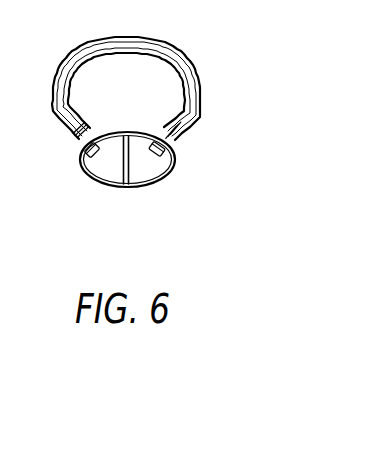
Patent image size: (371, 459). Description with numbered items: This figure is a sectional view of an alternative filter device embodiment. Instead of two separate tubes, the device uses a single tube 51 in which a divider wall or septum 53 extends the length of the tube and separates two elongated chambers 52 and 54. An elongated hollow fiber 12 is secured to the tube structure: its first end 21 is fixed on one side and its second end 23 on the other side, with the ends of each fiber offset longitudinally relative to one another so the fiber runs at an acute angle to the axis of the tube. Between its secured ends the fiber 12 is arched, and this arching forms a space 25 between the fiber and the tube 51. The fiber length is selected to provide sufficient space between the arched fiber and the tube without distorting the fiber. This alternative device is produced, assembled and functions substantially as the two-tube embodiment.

The elongated hollow fiber 12 is at (162, 43).
The space 25 is at (153, 98).
The second end 23 is at (82, 158).
The first end 21 is at (173, 167).
The single tube 51 is at (150, 168).
The elongated chamber 52 is at (100, 166).
The divider wall or septum 53 is at (123, 167).
The elongated chamber 54 is at (140, 168).